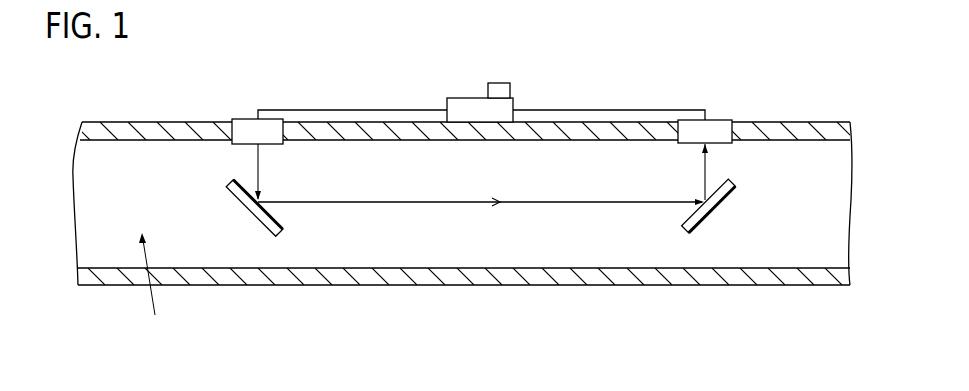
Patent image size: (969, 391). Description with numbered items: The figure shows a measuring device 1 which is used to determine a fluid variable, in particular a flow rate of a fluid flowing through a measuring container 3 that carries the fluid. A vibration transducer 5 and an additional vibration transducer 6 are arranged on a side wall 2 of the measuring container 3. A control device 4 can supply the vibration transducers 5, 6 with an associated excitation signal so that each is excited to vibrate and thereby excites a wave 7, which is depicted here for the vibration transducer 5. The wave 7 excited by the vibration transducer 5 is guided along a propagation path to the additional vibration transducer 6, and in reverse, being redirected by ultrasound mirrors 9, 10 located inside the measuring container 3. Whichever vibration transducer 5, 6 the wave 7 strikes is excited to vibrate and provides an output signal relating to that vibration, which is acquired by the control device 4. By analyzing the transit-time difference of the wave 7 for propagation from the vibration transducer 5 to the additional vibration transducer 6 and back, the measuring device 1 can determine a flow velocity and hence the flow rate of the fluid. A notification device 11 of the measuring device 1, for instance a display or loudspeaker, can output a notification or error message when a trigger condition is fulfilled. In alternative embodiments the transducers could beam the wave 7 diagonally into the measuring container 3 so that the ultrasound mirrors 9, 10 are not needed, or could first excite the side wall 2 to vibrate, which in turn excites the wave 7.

The measuring device 1 is at (457, 205).
The side wall 2 is at (782, 123).
The measuring container 3 is at (152, 289).
The control device 4 is at (458, 97).
The vibration transducer 5 is at (240, 118).
The additional vibration transducer 6 is at (717, 120).
The wave 7 is at (417, 201).
The ultrasound mirror 9 is at (240, 206).
The ultrasound mirror 10 is at (720, 207).
The notification device 11 is at (507, 83).